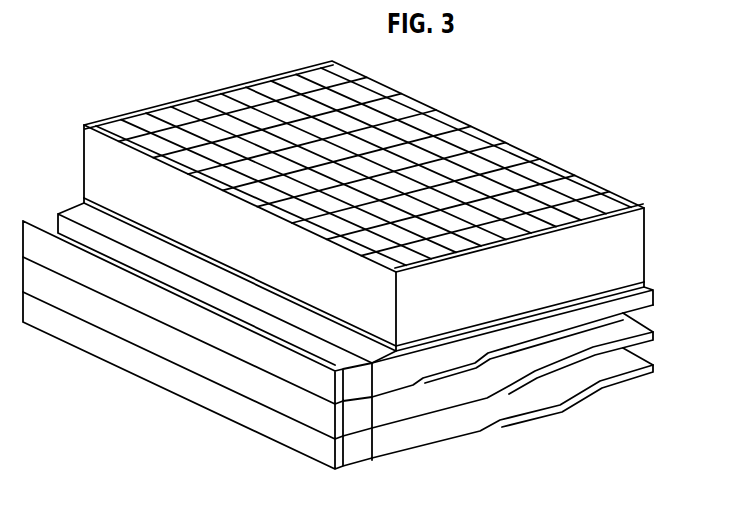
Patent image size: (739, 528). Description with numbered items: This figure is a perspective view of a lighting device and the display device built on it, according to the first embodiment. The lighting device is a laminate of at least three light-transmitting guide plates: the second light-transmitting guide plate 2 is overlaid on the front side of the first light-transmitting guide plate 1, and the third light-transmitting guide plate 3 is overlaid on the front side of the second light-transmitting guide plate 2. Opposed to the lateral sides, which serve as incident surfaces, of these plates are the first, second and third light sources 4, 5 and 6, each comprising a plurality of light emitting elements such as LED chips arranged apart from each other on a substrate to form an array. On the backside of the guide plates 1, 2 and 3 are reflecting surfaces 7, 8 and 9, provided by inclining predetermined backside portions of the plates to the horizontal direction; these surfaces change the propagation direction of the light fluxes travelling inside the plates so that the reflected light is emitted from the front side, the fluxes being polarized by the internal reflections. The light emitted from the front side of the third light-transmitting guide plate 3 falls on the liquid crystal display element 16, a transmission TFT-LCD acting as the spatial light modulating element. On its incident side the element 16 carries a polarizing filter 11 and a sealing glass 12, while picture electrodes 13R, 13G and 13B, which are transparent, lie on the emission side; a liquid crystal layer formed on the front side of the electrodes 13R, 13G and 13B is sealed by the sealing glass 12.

The first light-transmitting guide plate 1 is at (395, 441).
The second light-transmitting guide plate 2 is at (420, 406).
The third light-transmitting guide plate 3 is at (455, 354).
The first light source 4 is at (190, 382).
The second light source 5 is at (155, 336).
The third light source 6 is at (110, 287).
The reflecting surface 7 is at (525, 412).
The reflecting surface 8 is at (503, 387).
The reflecting surface 9 is at (485, 361).
The polarizing filter 11 is at (82, 200).
The sealing glass 12 is at (88, 150).
The picture electrode 13R is at (100, 118).
The picture electrode 13G is at (118, 123).
The picture electrode 13B is at (135, 112).
The liquid crystal display element 16 is at (484, 110).